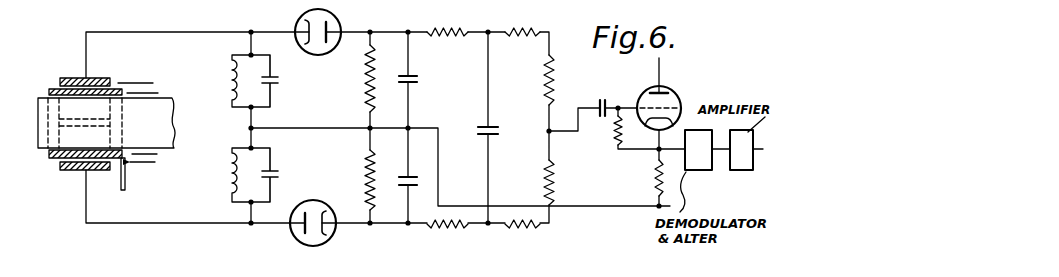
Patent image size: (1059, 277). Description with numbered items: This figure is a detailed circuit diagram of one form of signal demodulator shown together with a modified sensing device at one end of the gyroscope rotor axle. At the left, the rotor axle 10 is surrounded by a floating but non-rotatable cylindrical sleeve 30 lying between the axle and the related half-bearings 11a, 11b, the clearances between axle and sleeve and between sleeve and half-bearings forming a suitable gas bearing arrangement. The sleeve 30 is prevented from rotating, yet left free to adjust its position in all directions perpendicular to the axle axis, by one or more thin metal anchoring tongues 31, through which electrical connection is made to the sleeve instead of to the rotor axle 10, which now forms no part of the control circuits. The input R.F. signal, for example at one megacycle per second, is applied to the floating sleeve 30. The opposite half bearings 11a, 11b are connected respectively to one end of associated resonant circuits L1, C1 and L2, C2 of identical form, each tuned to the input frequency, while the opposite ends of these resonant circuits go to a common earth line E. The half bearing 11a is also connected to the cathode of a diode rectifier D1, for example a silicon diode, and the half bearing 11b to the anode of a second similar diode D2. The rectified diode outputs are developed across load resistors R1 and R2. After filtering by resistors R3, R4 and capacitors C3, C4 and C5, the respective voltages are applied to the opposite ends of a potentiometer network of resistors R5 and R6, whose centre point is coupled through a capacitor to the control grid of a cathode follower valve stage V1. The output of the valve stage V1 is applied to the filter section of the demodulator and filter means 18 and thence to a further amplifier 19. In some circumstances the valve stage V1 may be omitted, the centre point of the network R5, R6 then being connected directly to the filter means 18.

The rotor axle 10 is at (163, 135).
The half-bearing 11a is at (96, 78).
The half-bearing 11b is at (68, 170).
The floating sleeve 30 is at (61, 78).
The anchoring tongue 31 is at (125, 178).
The filter means 18 is at (700, 162).
The amplifier 19 is at (745, 165).
The diode rectifier D1 is at (296, 22).
The second diode D2 is at (294, 240).
The inductor of resonant circuit L1 is at (225, 81).
The inductor of resonant circuit L2 is at (225, 176).
The capacitor of resonant circuit C1 is at (280, 81).
The capacitor of resonant circuit C2 is at (280, 175).
The filter capacitor C3 is at (423, 80).
The filter capacitor C4 is at (418, 169).
The filter capacitor C5 is at (503, 124).
The load resistor R1 is at (357, 78).
The load resistor R2 is at (356, 180).
The filter resistor R3 is at (447, 46).
The filter resistor R4 is at (447, 237).
The potentiometer network resistor R5 is at (565, 80).
The potentiometer network resistor R6 is at (564, 182).
The cathode follower valve stage V1 is at (669, 97).
The common earth line E is at (621, 209).